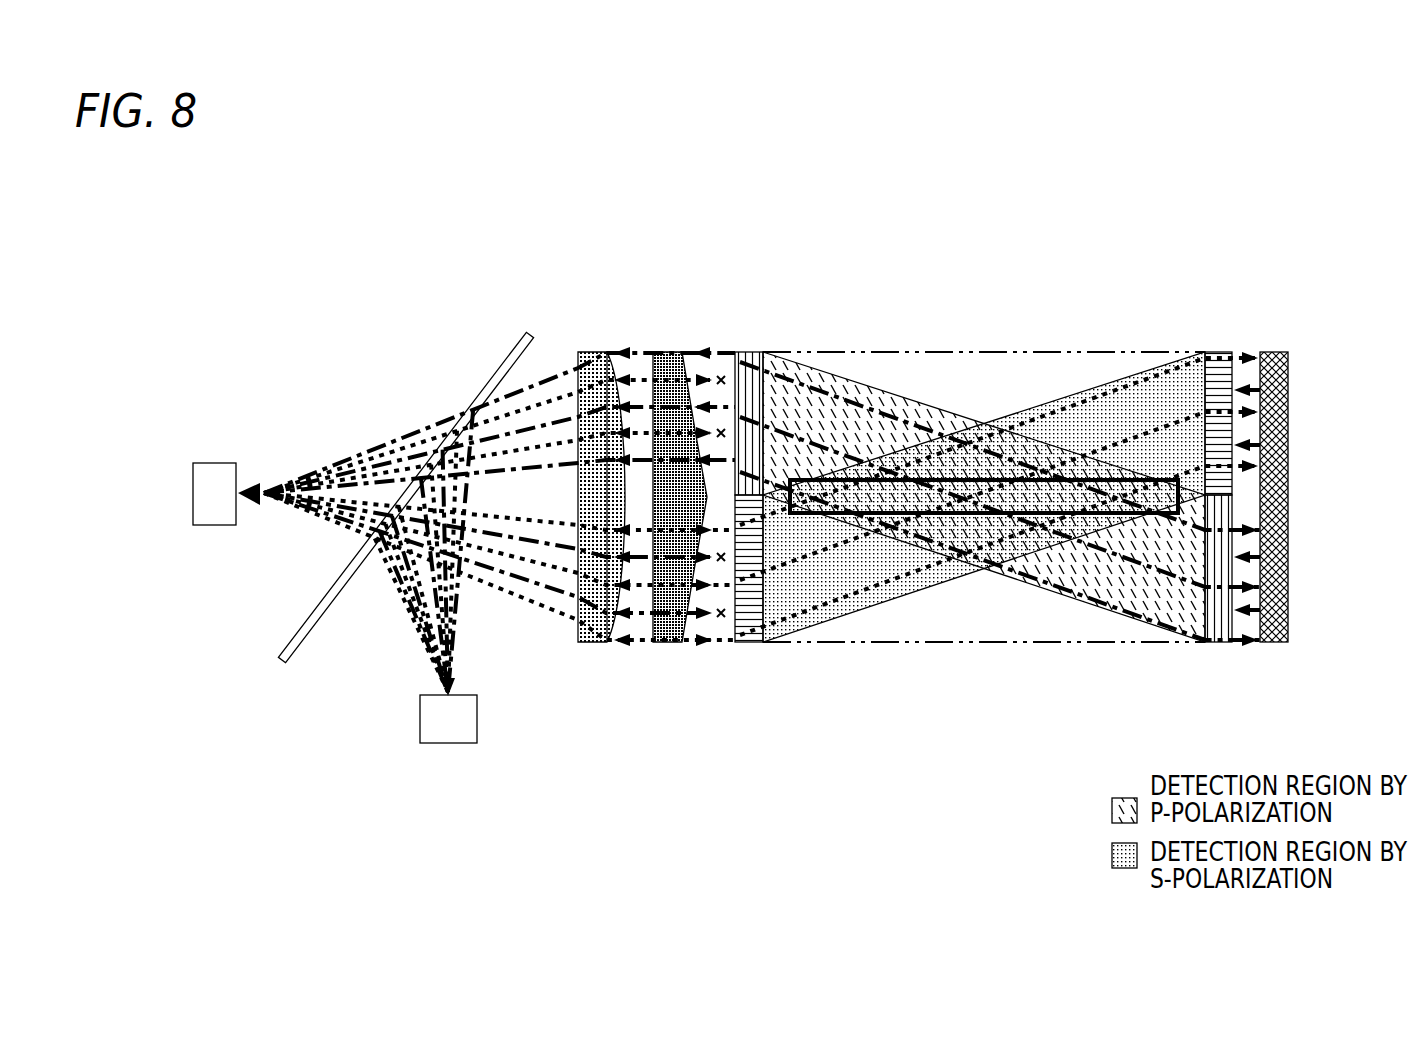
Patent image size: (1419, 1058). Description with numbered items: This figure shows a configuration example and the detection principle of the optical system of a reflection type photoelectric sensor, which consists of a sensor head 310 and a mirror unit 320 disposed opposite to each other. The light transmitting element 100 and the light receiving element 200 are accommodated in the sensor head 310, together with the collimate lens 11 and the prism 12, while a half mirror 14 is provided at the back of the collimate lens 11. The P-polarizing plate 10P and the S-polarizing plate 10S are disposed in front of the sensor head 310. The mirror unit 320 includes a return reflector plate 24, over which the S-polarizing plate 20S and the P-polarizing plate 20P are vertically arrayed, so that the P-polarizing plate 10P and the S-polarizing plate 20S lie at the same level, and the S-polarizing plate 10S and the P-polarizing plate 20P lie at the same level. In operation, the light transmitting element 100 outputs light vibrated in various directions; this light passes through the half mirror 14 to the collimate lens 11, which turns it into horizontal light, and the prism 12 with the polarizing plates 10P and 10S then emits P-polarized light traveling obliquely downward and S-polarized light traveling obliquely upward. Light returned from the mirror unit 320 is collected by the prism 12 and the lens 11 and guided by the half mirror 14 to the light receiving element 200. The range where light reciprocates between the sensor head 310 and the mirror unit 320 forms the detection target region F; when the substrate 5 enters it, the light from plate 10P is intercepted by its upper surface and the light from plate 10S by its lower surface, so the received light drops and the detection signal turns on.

The sensor head 310 is at (330, 300).
The mirror unit 320 is at (1230, 218).
The light transmitting element 100 is at (214, 465).
The half mirror 14 is at (503, 362).
The collimate lens 11 is at (595, 354).
The prism 12 is at (669, 354).
The P-polarizing plate 10P is at (752, 354).
The S-polarizing plate 10S is at (751, 634).
The detection target region F is at (858, 352).
The substrate 5 is at (958, 588).
The S-polarizing plate 20S is at (1218, 354).
The P-polarizing plate 20P is at (1217, 645).
The return reflector plate 24 is at (1273, 352).
The light receiving element 200 is at (477, 722).